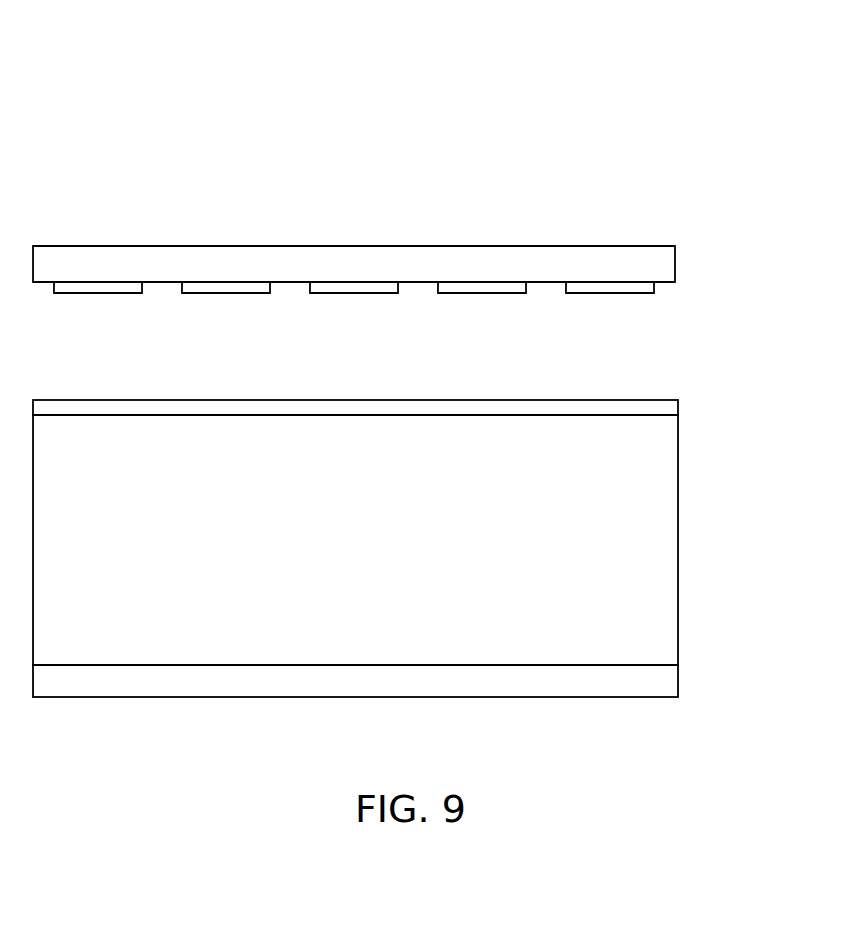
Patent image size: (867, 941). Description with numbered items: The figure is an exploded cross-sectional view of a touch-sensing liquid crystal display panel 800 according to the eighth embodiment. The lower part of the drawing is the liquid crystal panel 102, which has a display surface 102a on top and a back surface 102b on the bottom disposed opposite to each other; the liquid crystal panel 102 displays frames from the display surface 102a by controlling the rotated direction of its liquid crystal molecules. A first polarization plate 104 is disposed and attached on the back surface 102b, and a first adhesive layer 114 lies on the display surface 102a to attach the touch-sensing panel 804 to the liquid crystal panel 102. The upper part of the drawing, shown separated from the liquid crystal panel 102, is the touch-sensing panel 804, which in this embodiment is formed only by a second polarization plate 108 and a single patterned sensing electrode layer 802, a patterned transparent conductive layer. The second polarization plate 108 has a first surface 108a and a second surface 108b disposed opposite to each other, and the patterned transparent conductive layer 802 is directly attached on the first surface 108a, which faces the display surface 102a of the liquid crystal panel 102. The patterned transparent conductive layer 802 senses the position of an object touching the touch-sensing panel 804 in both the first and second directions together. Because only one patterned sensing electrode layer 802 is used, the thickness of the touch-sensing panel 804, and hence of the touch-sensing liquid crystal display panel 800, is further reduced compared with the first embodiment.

The touch-sensing liquid crystal display panel 800 is at (690, 72).
The patterned sensing electrode layer 802 is at (43, 302).
The touch-sensing panel 804 is at (750, 217).
The second polarization plate 108 is at (650, 272).
The first surface 108a is at (675, 282).
The second surface 108b is at (675, 247).
The first adhesive layer 114 is at (672, 403).
The liquid crystal panel 102 is at (648, 564).
The display surface 102a is at (658, 415).
The back surface 102b is at (652, 666).
The first polarization plate 104 is at (667, 686).